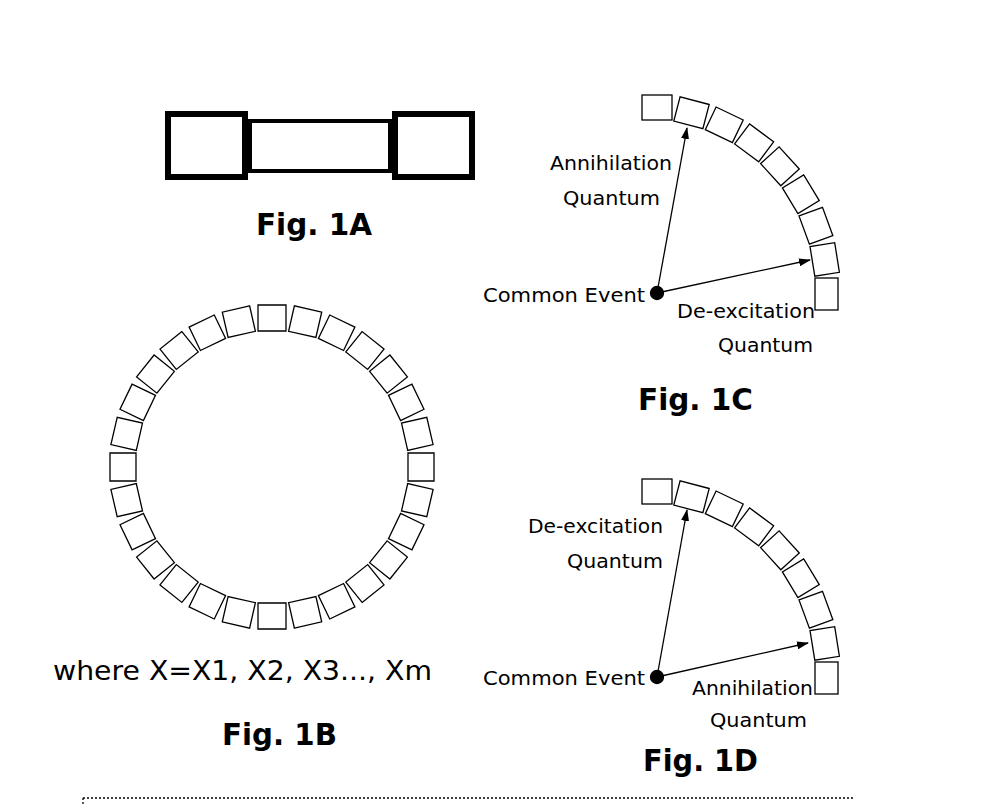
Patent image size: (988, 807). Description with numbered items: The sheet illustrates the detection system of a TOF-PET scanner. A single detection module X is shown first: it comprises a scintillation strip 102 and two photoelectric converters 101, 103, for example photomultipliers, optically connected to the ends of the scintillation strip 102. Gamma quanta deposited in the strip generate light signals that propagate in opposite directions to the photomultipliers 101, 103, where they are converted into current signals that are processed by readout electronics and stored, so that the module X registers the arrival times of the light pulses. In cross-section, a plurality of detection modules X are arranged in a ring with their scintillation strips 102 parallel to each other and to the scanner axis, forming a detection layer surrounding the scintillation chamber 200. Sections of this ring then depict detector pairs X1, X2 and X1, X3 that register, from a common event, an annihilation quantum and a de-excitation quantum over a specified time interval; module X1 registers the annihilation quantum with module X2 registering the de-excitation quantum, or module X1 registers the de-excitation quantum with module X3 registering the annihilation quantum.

In FIG. 1A, the detection module X is at (122, 110).
In FIG. 1B, the detection module X is at (192, 327).
In FIG. 1A, the photoelectric converter 101 is at (232, 111).
In FIG. 1A, the scintillation strip 102 is at (362, 119).
In FIG. 1A, the photoelectric converter 103 is at (405, 111).
In FIG. 1B, the scintillation chamber 200 is at (270, 465).
In FIG. 1C, the detector module X1 is at (697, 100).
In FIG. 1D, the detector module X1 is at (697, 483).
In FIG. 1C, the detector module X2 is at (838, 278).
In FIG. 1D, the detector module X3 is at (838, 662).